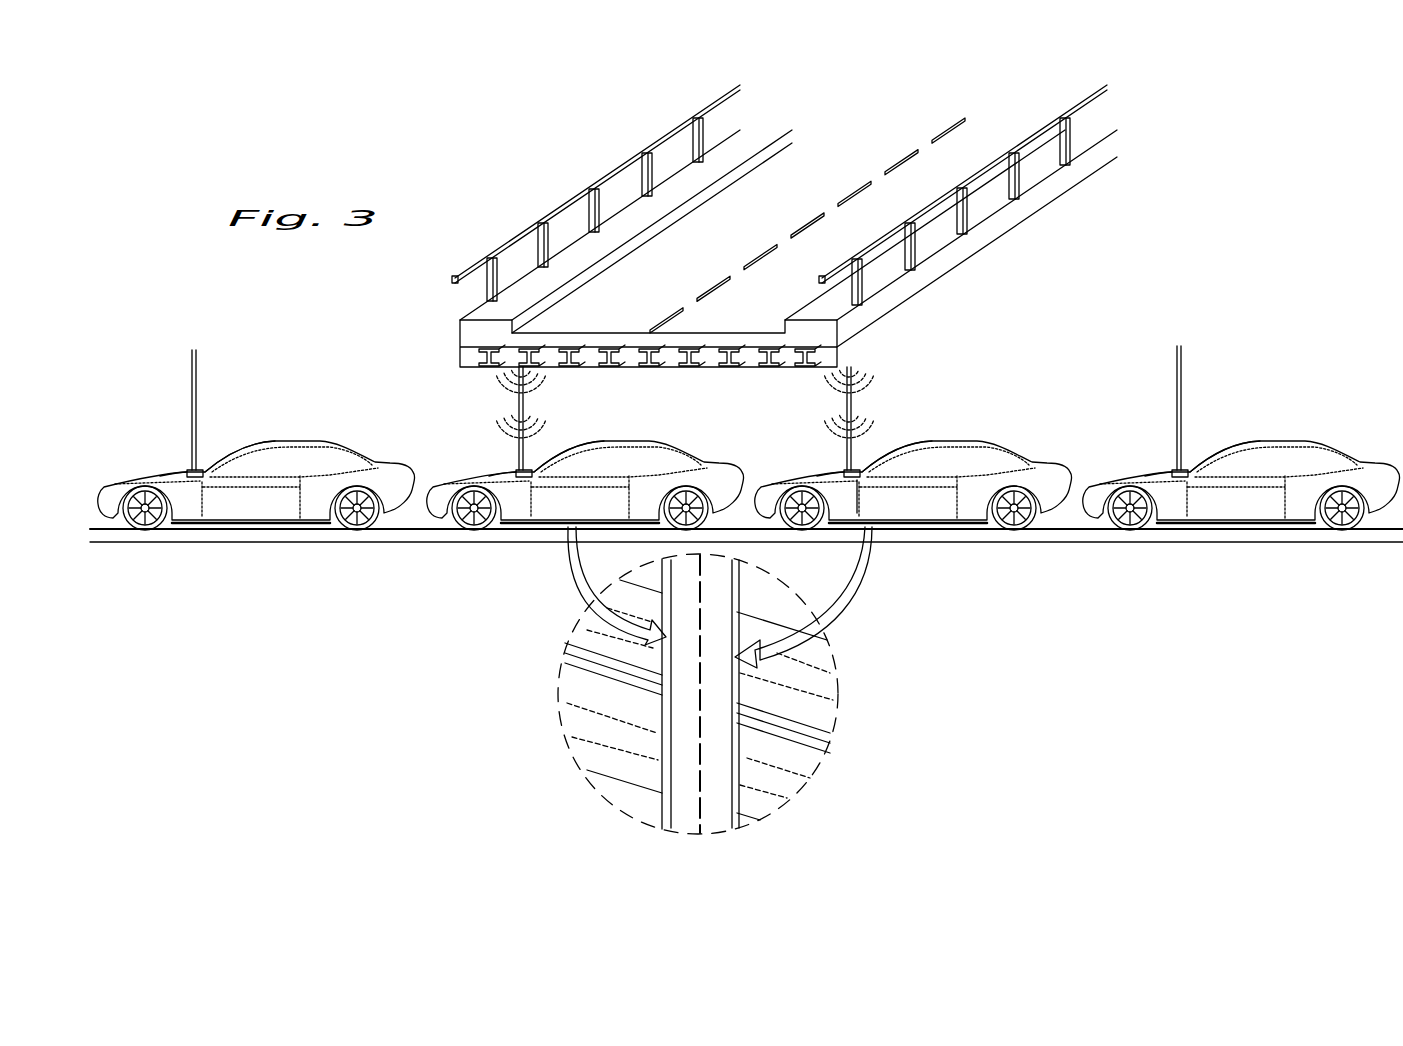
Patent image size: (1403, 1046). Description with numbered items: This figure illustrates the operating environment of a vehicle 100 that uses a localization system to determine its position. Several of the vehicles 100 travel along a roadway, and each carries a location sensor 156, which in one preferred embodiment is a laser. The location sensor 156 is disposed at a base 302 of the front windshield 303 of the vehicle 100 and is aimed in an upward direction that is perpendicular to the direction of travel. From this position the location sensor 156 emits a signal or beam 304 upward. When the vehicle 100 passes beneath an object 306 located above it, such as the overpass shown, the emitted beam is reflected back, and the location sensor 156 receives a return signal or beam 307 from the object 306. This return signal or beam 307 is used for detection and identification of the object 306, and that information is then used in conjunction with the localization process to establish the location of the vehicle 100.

The vehicle 100 is at (315, 430).
The location sensor 156 is at (187, 472).
The base of the front windshield 302 is at (205, 483).
The front windshield 303 is at (236, 455).
The signal or beam 304 is at (191, 405).
The object 306 is at (928, 280).
The return signal or beam 307 is at (518, 410).